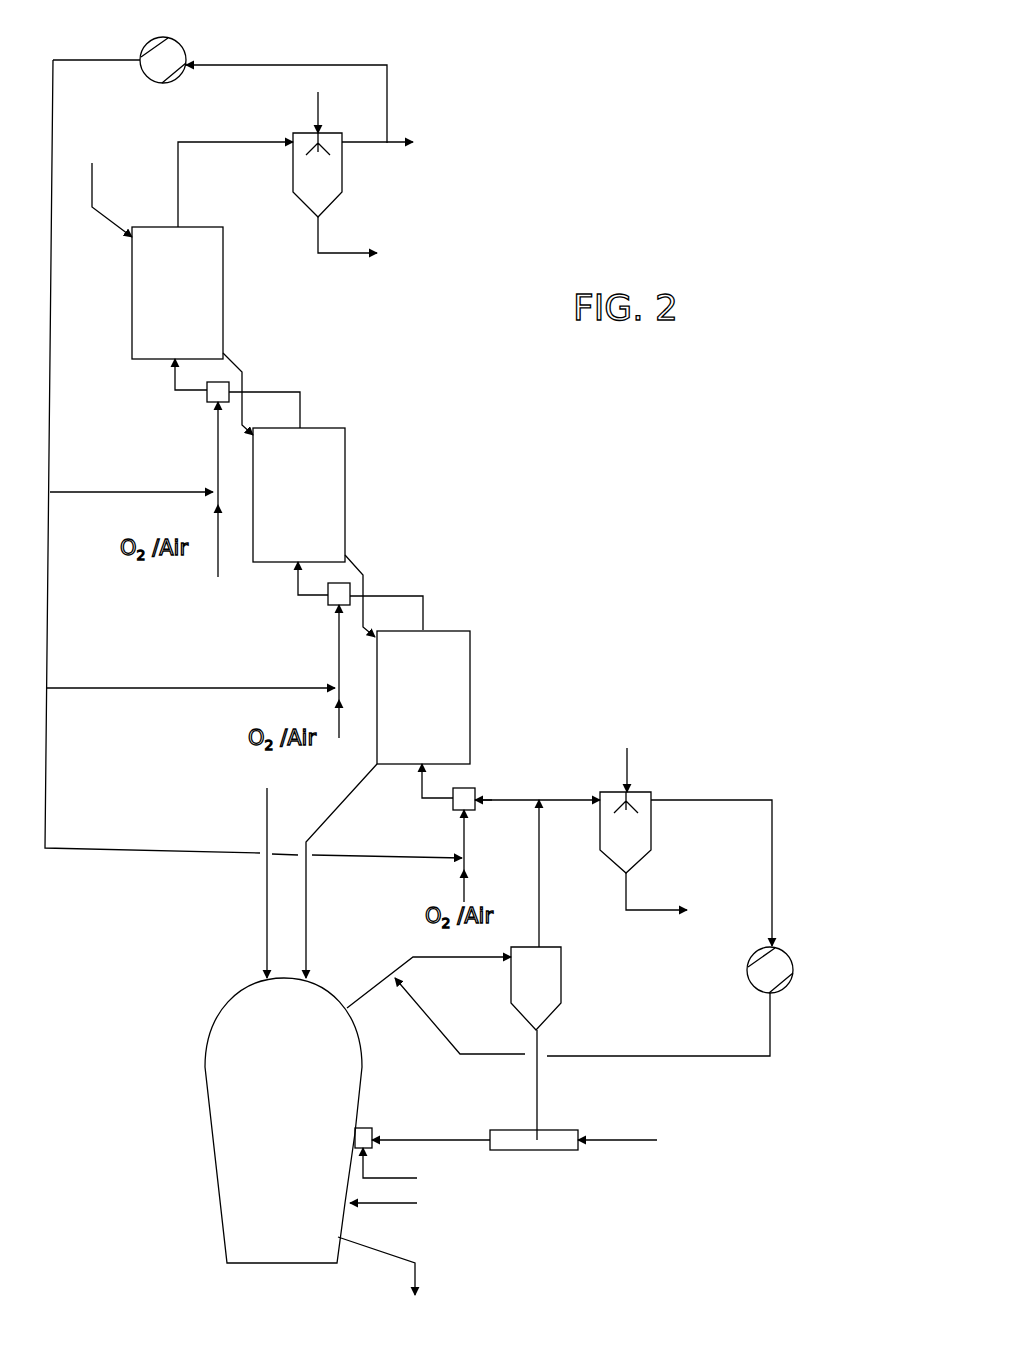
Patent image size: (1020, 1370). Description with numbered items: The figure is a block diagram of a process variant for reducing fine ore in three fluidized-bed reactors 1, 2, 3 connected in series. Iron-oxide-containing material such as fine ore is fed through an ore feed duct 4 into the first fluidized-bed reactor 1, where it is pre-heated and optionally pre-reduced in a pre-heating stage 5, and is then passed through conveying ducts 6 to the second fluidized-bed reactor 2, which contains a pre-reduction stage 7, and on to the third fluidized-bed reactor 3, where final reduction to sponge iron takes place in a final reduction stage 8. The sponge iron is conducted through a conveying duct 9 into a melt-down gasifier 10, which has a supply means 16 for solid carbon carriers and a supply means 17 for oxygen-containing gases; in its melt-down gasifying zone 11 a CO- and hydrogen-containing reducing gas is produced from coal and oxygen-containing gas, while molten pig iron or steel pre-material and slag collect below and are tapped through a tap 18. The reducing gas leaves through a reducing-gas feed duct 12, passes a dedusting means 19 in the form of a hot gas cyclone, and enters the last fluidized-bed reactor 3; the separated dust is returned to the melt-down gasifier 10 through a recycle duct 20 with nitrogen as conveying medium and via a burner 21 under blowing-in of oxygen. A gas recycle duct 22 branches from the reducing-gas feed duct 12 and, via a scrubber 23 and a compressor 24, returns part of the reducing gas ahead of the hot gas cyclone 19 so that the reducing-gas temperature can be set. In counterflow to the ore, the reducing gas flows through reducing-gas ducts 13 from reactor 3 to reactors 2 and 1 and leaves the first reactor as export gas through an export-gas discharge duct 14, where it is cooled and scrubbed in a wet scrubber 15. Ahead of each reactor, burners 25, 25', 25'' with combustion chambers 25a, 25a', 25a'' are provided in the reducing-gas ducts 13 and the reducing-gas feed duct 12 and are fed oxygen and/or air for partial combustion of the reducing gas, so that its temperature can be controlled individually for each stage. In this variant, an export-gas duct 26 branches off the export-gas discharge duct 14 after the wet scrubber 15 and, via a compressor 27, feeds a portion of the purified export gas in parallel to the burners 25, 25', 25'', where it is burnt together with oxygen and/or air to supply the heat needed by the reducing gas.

The fluidized-bed reactor 1 is at (208, 293).
The fluidized-bed reactor 2 is at (330, 495).
The fluidized-bed reactor 3 is at (456, 697).
The ore feed duct 4 is at (95, 183).
The pre-heating stage 5 is at (172, 297).
The conveying ducts 6 is at (243, 377).
The pre-reduction stage 7 is at (292, 499).
The final reduction stage 8 is at (419, 701).
The conveying duct 9 is at (327, 808).
The melt-down gasifier 10 is at (253, 1097).
The melt-down gasifying zone 11 is at (265, 1082).
The reducing-gas feed duct 12 is at (513, 797).
The reducing-gas ducts 13 is at (303, 405).
The export-gas discharge duct 14 is at (213, 142).
The wet scrubber 15 is at (330, 188).
The supply means for solid carbon carriers 16 is at (260, 837).
The supply means for oxygen-containing gases 17 is at (400, 1203).
The tap 18 is at (378, 1250).
The dedusting means 19 is at (524, 996).
The recycle duct 20 is at (442, 1135).
The burner 21 is at (365, 1125).
The gas recycle duct 22 is at (708, 800).
The scrubber 23 is at (614, 846).
The compressor 24 is at (775, 958).
The burner 25 is at (468, 796).
The combustion chamber 25a is at (497, 750).
The burner 25' is at (268, 660).
The combustion chamber 25a' is at (268, 612).
The burner 25'' is at (155, 479).
The combustion chamber 25a'' is at (155, 408).
The export-gas duct 26 is at (257, 63).
The compressor 27 is at (165, 83).